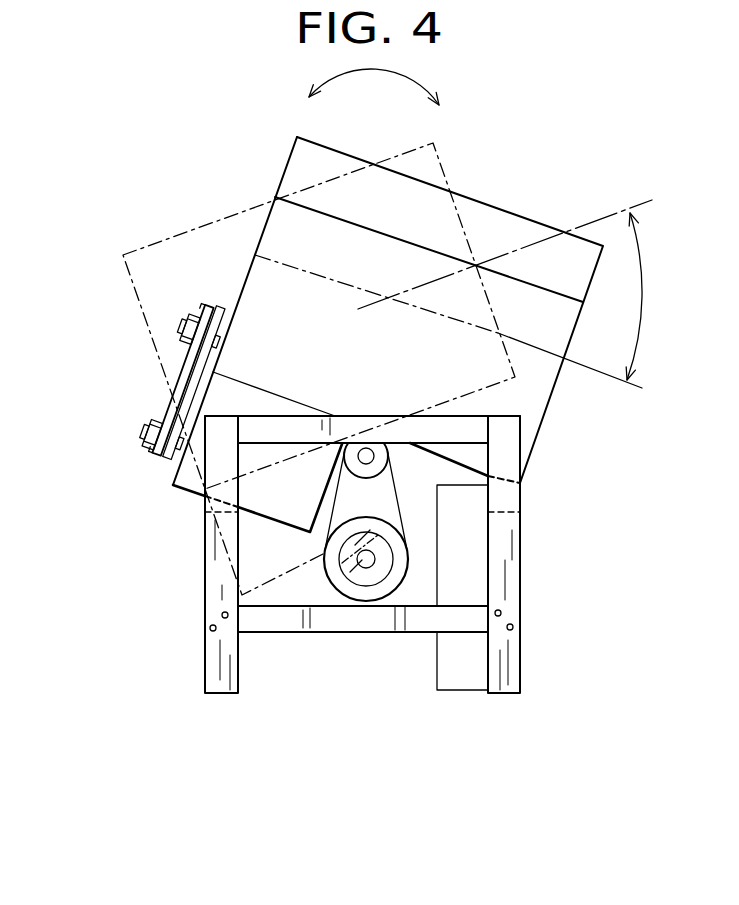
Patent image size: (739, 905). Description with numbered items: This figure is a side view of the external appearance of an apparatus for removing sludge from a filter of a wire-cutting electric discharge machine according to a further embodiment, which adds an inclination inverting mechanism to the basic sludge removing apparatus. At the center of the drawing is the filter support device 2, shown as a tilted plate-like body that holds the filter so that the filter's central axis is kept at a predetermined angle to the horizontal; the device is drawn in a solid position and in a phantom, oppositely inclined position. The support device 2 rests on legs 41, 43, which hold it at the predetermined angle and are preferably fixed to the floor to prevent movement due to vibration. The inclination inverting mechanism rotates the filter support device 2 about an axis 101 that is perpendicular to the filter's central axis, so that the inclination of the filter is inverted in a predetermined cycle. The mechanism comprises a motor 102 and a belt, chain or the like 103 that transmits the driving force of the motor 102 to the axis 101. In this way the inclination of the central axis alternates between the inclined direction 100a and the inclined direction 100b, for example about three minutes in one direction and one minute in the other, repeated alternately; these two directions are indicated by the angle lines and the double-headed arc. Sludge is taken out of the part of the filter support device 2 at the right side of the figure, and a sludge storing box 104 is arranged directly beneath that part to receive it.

The filter support device 2 is at (498, 207).
The leg 41 is at (223, 664).
The leg 43 is at (502, 652).
The inclined direction 100a is at (608, 378).
The inclined direction 100b is at (603, 218).
The axis 101 is at (377, 456).
The motor 102 is at (357, 573).
The belt 103 is at (395, 502).
The sludge storing box 104 is at (462, 677).